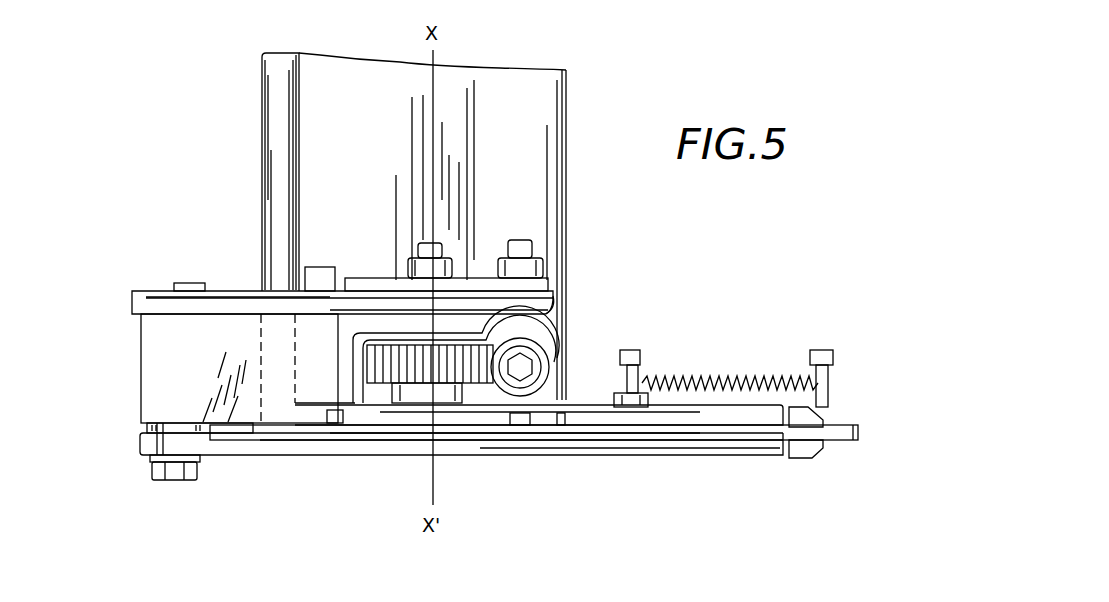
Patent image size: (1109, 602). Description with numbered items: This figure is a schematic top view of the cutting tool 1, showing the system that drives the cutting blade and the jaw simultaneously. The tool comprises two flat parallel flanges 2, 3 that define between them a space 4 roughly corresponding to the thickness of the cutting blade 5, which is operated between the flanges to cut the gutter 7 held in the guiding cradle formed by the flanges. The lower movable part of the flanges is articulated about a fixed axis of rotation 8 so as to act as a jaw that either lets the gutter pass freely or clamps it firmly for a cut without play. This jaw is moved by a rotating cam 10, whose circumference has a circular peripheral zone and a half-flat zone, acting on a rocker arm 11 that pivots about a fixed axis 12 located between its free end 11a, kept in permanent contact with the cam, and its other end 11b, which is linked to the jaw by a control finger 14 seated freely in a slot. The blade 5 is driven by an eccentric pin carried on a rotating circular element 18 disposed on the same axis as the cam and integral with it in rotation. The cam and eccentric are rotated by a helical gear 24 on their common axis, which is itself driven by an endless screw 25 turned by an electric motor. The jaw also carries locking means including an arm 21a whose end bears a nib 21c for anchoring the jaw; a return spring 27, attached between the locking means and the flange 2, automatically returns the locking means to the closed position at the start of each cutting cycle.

The cutting tool 1 is at (121, 265).
The flange 2 is at (662, 425).
The flange 3 is at (492, 450).
The space 4 is at (606, 430).
The cutting blade 5 is at (452, 432).
The gutter 7 is at (305, 130).
The fixed axis of rotation 8 is at (166, 426).
The rotating cam 10 is at (456, 283).
The rocker arm 11 is at (540, 298).
The free end of rocker arm 11a is at (552, 311).
The other end of rocker arm 11b is at (230, 300).
The fixed axis 12 is at (325, 267).
The control finger 14 is at (185, 283).
The rotating circular element 18 is at (360, 420).
The arm of locking means 21a is at (858, 428).
The nib 21c is at (828, 456).
The helical gear 24 is at (395, 415).
The endless screw 25 is at (553, 376).
The return spring 27 is at (718, 382).